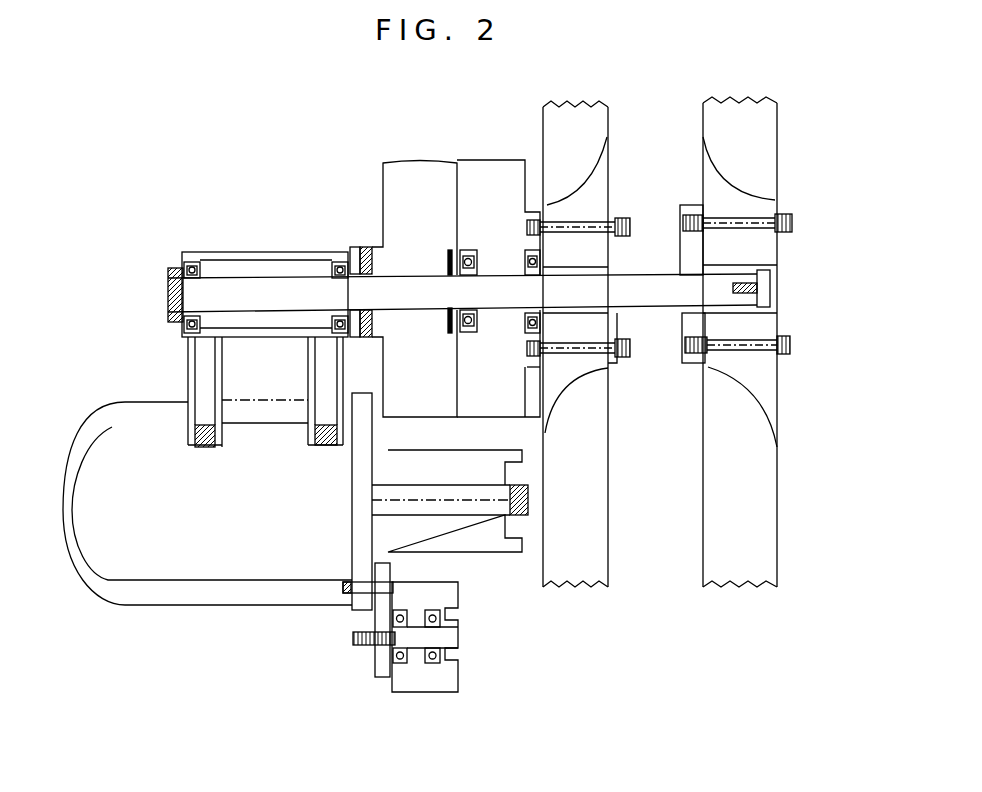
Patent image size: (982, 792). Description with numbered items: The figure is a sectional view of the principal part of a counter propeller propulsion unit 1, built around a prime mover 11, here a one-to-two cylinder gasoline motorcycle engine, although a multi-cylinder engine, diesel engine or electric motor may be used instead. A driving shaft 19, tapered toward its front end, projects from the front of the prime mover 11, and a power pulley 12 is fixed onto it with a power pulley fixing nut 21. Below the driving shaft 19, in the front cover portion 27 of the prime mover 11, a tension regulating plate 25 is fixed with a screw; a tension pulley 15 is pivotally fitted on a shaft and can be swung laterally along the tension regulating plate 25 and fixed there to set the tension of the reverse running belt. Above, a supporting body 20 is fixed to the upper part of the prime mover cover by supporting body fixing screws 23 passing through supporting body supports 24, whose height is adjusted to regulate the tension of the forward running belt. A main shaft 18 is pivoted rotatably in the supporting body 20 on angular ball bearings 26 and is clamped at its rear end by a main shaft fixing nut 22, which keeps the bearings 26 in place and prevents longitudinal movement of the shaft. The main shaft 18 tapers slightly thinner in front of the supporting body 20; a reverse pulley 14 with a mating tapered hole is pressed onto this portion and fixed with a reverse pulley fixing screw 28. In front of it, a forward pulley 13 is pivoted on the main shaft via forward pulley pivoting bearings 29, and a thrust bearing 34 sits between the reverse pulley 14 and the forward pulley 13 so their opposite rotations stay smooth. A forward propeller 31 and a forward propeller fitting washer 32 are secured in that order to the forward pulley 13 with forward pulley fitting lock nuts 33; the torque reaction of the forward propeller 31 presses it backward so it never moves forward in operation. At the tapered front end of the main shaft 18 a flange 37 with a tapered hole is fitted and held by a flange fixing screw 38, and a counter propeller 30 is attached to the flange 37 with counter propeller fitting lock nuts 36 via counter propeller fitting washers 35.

The rotary drive unit 1 is at (266, 138).
The prime mover 11 is at (198, 540).
The power pulley 12 is at (493, 532).
The forward pulley 13 is at (492, 178).
The reverse pulley 14 is at (407, 212).
The tension pulley 15 is at (422, 682).
The main shaft 18 is at (270, 293).
The driving shaft 19 is at (450, 502).
The supporting body 20 is at (293, 253).
The power pulley fixing nut 21 is at (528, 500).
The main shaft fixing nut 22 is at (165, 288).
The supporting body fixing screw 23 is at (193, 445).
The supporting body support 24 is at (187, 380).
The tension regulating plate 25 is at (380, 667).
The angular ball bearing 26 is at (182, 323).
The front cover portion 27 is at (347, 547).
The reverse pulley fixing screw 28 is at (350, 243).
The forward pulley pivoting bearing 29 is at (527, 390).
The counter propeller 30 is at (753, 567).
The forward propeller 31 is at (600, 543).
The forward propeller fitting washer 32 is at (613, 207).
The forward pulley fitting lock nut 33 is at (547, 320).
The thrust bearing 34 is at (450, 272).
The counter propeller fitting washer 35 is at (783, 360).
The counter propeller fitting lock nut 36 is at (793, 218).
The flange 37 is at (693, 212).
The flange fixing screw 38 is at (773, 285).